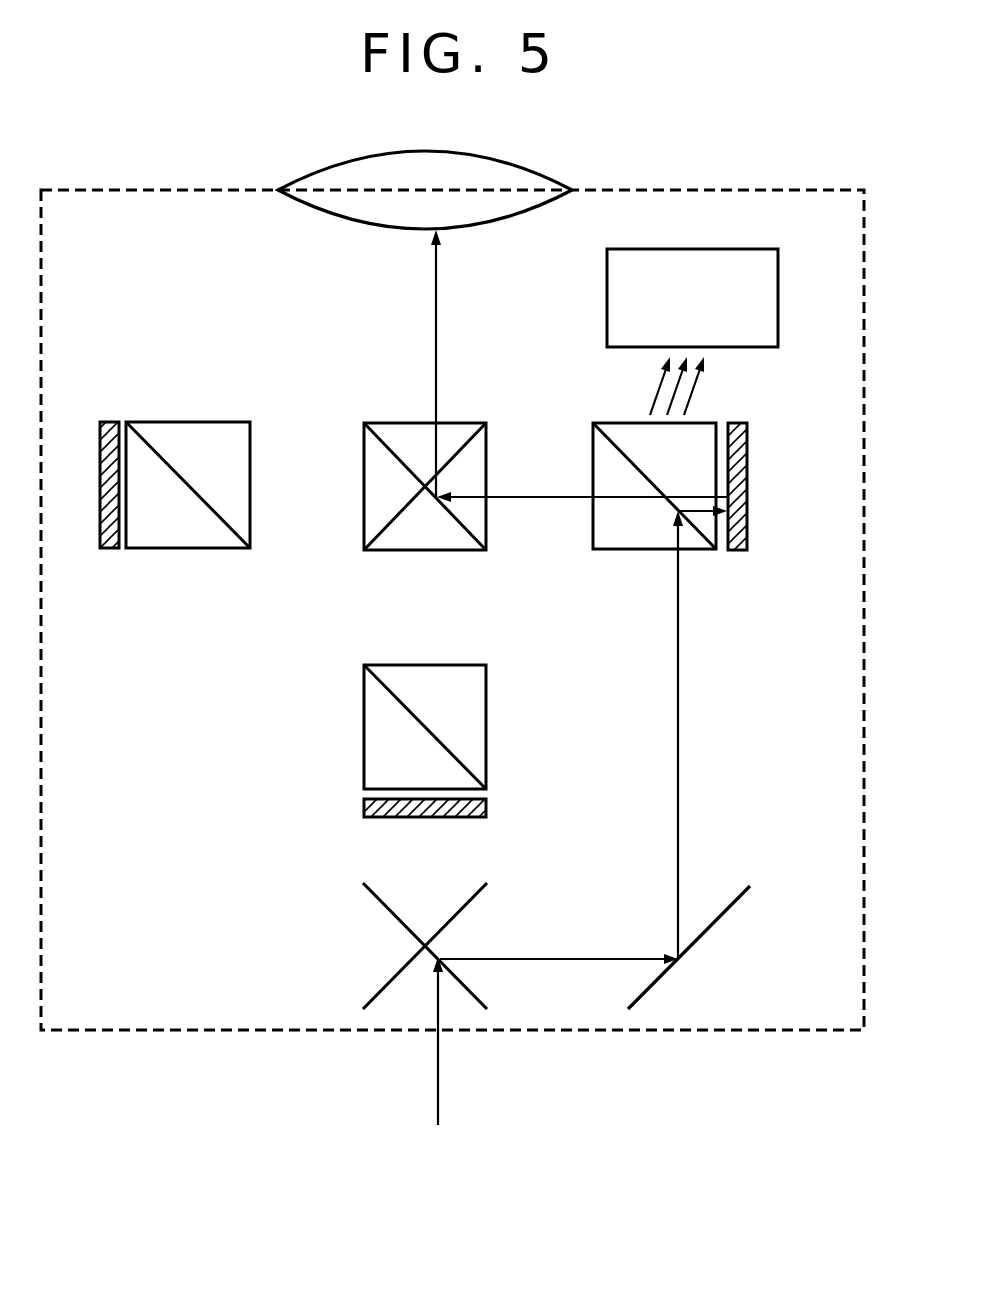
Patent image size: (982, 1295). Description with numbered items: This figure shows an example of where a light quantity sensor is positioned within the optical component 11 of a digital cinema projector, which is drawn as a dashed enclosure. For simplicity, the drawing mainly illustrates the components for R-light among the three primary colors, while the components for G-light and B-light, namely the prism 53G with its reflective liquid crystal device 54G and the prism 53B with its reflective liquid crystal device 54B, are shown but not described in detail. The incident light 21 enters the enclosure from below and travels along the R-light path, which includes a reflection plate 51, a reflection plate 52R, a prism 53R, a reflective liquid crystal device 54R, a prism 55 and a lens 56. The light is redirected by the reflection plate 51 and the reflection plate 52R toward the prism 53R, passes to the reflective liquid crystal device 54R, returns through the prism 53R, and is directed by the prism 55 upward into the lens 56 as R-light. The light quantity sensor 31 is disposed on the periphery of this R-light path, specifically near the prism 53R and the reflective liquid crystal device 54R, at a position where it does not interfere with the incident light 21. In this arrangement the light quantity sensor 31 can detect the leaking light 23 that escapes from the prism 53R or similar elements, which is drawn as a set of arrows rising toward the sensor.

The optical component 11 is at (105, 1031).
The incident light 21 is at (460, 1082).
The leaking light 23 is at (713, 393).
The light quantity sensor 31 is at (778, 292).
The reflection plate 51 is at (493, 909).
The reflection plate 52R is at (770, 875).
The prism 53B is at (195, 550).
The prism 53G is at (364, 730).
The prism 53R is at (636, 550).
The reflective liquid crystal device 54B is at (112, 548).
The reflective liquid crystal device 54G is at (364, 806).
The reflective liquid crystal device 54R is at (747, 467).
The prism 55 is at (395, 423).
The lens 56 is at (357, 220).